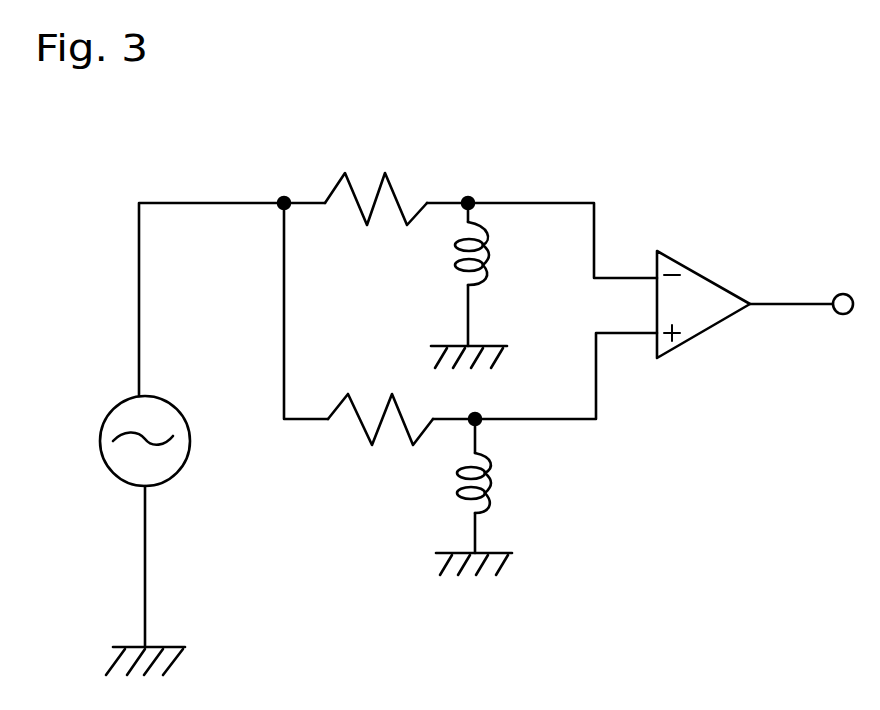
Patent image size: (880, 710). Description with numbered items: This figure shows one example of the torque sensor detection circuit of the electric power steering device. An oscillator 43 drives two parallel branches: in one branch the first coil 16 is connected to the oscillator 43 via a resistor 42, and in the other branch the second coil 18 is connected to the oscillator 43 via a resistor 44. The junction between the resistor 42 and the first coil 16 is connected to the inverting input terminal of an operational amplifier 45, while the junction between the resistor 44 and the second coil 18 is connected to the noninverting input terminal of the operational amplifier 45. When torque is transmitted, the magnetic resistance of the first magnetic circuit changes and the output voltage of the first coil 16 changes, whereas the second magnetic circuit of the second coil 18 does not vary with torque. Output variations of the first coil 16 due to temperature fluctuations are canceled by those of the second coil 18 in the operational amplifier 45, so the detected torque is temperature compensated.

The resistor 42 is at (398, 197).
The first coil 16 is at (455, 265).
The resistor 44 is at (359, 423).
The second coil 18 is at (458, 492).
The oscillator 43 is at (117, 423).
The operational amplifier 45 is at (710, 306).